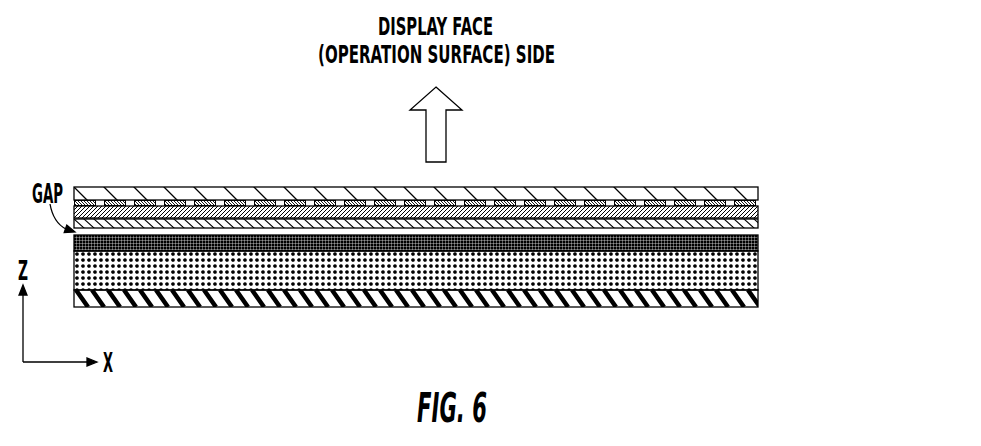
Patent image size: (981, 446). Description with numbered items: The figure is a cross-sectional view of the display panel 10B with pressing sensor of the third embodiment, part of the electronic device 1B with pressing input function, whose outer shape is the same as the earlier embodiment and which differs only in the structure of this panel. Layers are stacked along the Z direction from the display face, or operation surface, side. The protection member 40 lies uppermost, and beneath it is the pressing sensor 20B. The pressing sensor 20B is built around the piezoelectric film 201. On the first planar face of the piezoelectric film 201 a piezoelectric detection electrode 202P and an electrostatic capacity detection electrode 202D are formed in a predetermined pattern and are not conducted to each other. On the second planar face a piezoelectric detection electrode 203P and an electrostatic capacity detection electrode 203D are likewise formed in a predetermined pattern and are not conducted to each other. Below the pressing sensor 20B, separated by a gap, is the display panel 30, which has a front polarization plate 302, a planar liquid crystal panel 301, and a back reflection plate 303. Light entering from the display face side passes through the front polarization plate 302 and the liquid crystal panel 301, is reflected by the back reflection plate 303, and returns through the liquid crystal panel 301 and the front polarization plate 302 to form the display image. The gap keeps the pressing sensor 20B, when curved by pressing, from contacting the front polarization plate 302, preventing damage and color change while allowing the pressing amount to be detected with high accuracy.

The electronic device with pressing input function 1B is at (166, 126).
The display panel with pressing sensor 10B is at (754, 136).
The pressing sensor 20B is at (886, 145).
The protection member 40 is at (162, 192).
The electrostatic capacity detection electrode 202D is at (720, 203).
The piezoelectric detection electrode 202P is at (453, 177).
The piezoelectric film 201 is at (758, 212).
The piezoelectric detection electrode 203P is at (481, 235).
The electrostatic capacity detection electrode 203D is at (758, 224).
The display panel 30 is at (822, 255).
The front polarization plate 302 is at (758, 243).
The liquid crystal panel 301 is at (758, 272).
The back reflection plate 303 is at (758, 298).